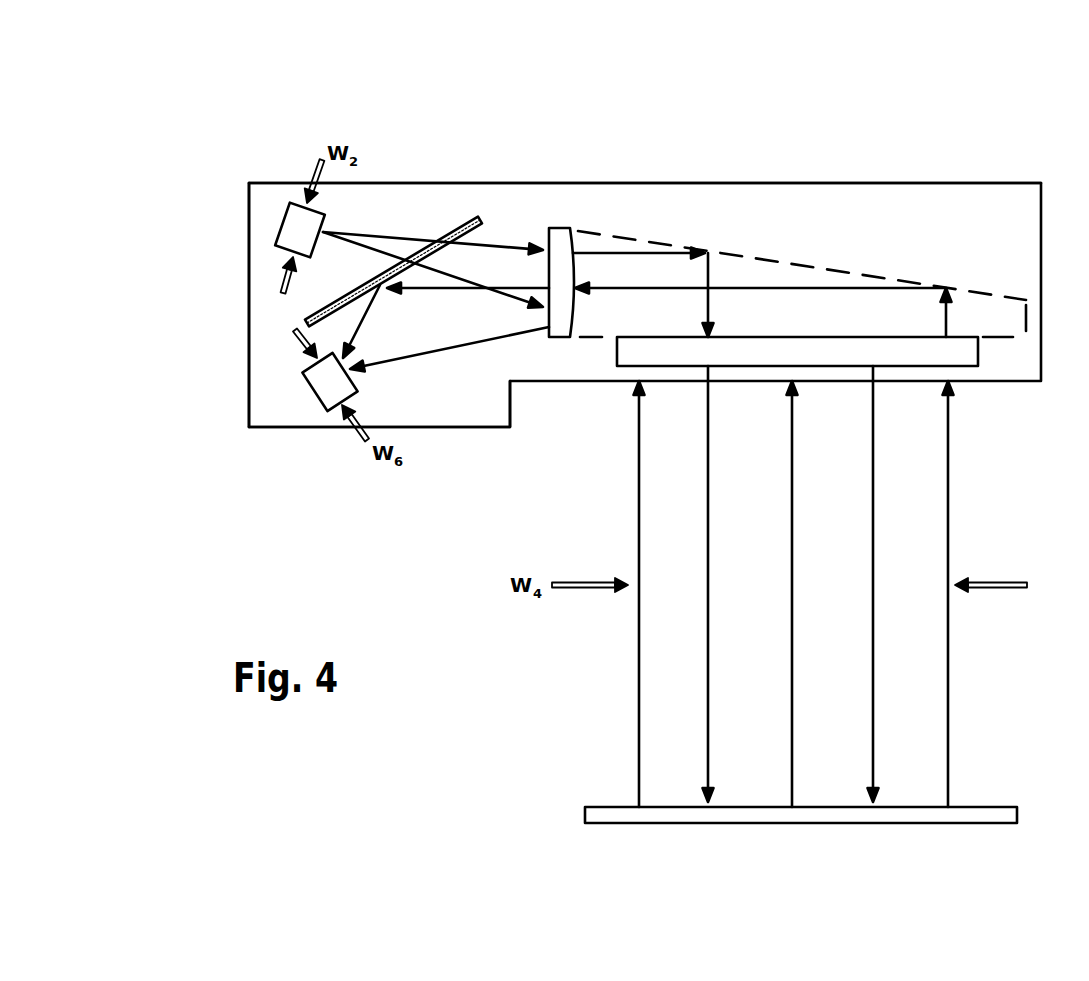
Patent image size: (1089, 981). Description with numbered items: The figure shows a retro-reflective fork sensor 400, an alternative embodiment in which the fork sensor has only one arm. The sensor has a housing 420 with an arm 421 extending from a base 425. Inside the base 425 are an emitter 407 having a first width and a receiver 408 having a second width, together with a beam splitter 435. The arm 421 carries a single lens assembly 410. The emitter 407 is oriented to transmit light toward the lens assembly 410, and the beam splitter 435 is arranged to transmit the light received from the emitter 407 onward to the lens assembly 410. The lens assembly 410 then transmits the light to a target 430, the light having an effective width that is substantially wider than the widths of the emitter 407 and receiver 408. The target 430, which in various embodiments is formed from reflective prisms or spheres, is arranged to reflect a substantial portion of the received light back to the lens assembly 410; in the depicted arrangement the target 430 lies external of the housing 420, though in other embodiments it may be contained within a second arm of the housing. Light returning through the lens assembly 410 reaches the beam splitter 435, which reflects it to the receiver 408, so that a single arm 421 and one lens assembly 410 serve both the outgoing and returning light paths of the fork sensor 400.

The retro-reflective fork sensor 400 is at (751, 99).
The emitter 407 is at (283, 218).
The receiver 408 is at (317, 392).
The lens assembly 410 is at (838, 268).
The housing 420 is at (247, 275).
The arm 421 is at (985, 183).
The base 425 is at (247, 393).
The target 430 is at (583, 810).
The beam splitter 435 is at (452, 233).